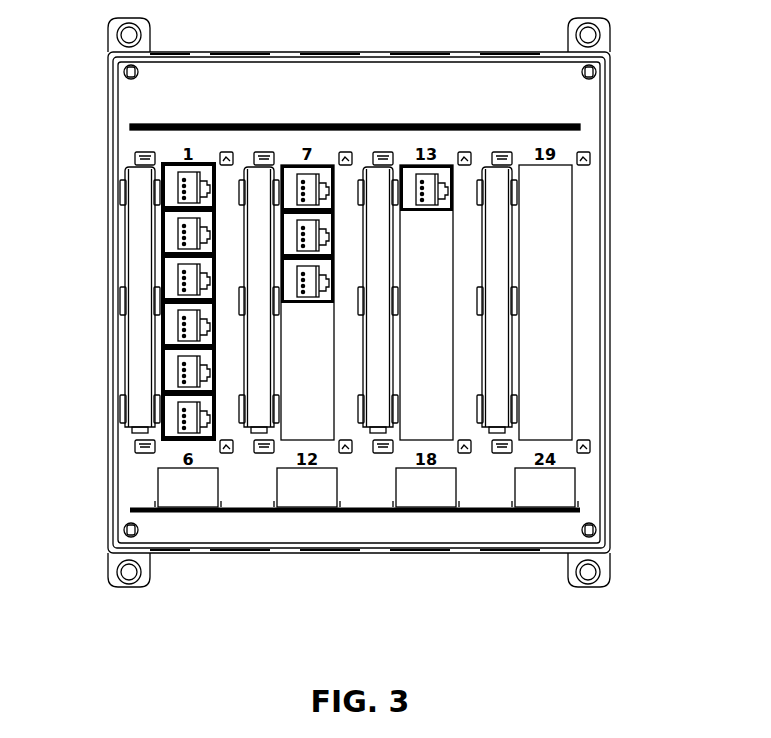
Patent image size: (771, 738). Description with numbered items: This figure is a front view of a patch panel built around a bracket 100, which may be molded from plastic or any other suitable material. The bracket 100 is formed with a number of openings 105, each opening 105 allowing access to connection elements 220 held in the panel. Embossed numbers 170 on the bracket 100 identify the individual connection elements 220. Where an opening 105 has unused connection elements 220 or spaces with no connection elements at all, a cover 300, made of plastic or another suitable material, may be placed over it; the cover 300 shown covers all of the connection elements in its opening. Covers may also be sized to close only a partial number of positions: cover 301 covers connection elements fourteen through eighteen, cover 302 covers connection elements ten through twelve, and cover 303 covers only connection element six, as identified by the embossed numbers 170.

The bracket 100 is at (606, 84).
The opening 105 is at (363, 226).
The embossed numbers 170 is at (562, 146).
The connection element 220 is at (172, 239).
The cover 300 is at (575, 422).
The cover 301 is at (445, 443).
The cover 302 is at (327, 443).
The cover 303 is at (207, 445).